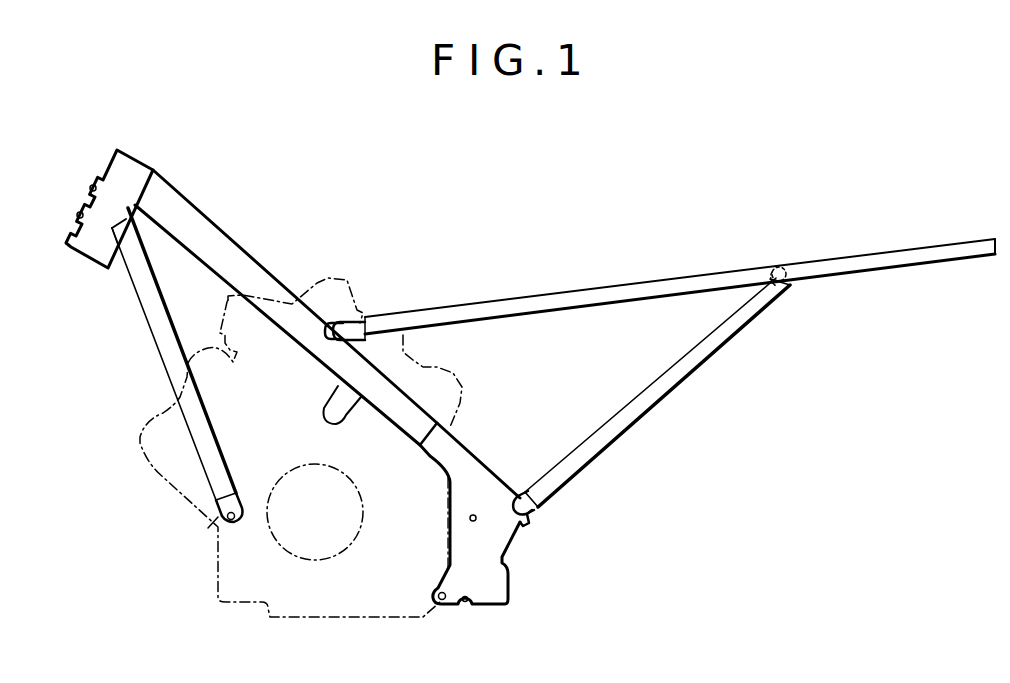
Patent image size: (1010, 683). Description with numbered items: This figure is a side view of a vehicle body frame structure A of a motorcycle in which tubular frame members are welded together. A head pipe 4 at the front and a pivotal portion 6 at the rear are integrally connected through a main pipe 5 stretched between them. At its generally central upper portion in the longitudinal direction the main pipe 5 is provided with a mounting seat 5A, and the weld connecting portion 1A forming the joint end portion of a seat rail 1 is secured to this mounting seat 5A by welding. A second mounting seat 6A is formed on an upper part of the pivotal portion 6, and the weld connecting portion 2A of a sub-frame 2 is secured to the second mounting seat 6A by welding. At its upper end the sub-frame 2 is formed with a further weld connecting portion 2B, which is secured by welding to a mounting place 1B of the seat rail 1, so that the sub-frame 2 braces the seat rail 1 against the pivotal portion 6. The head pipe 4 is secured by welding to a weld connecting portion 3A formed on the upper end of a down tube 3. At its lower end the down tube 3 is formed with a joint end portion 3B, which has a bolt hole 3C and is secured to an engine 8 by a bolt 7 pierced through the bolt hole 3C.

The seat rail 1 is at (658, 280).
The weld connecting portion 1A is at (357, 330).
The mounting place 1B is at (777, 268).
The sub-frame 2 is at (653, 393).
The weld connecting portion 2A is at (523, 500).
The weld connecting portion 2B is at (783, 288).
The down tube 3 is at (148, 336).
The weld connecting portion 3A is at (120, 236).
The joint end portion 3B is at (218, 511).
The bolt hole 3C is at (233, 525).
The head pipe 4 is at (112, 172).
The main pipe 5 is at (185, 212).
The mounting seat 5A is at (337, 323).
The pivotal portion 6 is at (502, 553).
The second mounting seat 6A is at (528, 517).
The bolt 7 is at (218, 530).
The engine 8 is at (312, 605).
The frame assembly A is at (503, 276).